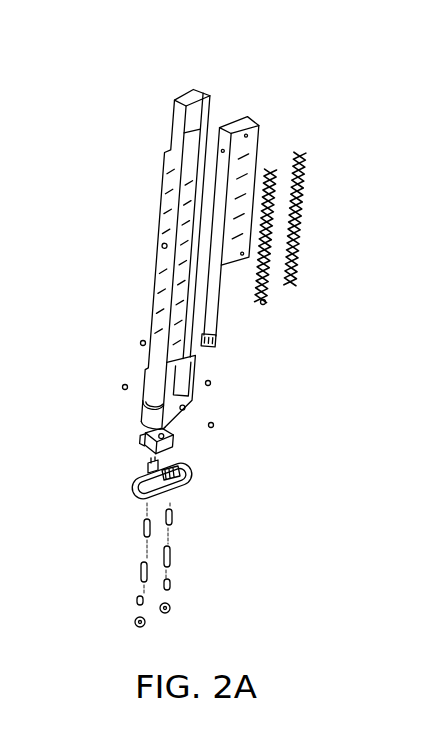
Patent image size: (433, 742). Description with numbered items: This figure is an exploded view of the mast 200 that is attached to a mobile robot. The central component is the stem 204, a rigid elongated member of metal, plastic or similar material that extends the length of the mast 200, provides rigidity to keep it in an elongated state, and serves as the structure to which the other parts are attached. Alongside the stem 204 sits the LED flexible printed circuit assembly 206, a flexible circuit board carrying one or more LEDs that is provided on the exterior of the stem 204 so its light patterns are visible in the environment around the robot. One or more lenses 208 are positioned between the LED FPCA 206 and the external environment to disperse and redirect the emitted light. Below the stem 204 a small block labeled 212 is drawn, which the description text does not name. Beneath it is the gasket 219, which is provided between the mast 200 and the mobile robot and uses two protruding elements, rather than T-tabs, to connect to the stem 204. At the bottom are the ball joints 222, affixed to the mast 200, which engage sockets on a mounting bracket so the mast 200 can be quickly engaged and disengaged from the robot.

The mast 200 is at (96, 64).
The stem 204 is at (188, 95).
The LED flexible printed circuit assembly 206 is at (245, 118).
The lenses 208 is at (305, 220).
The latch block 212 is at (182, 443).
The gasket 219 is at (193, 475).
The ball joints 222 is at (170, 610).